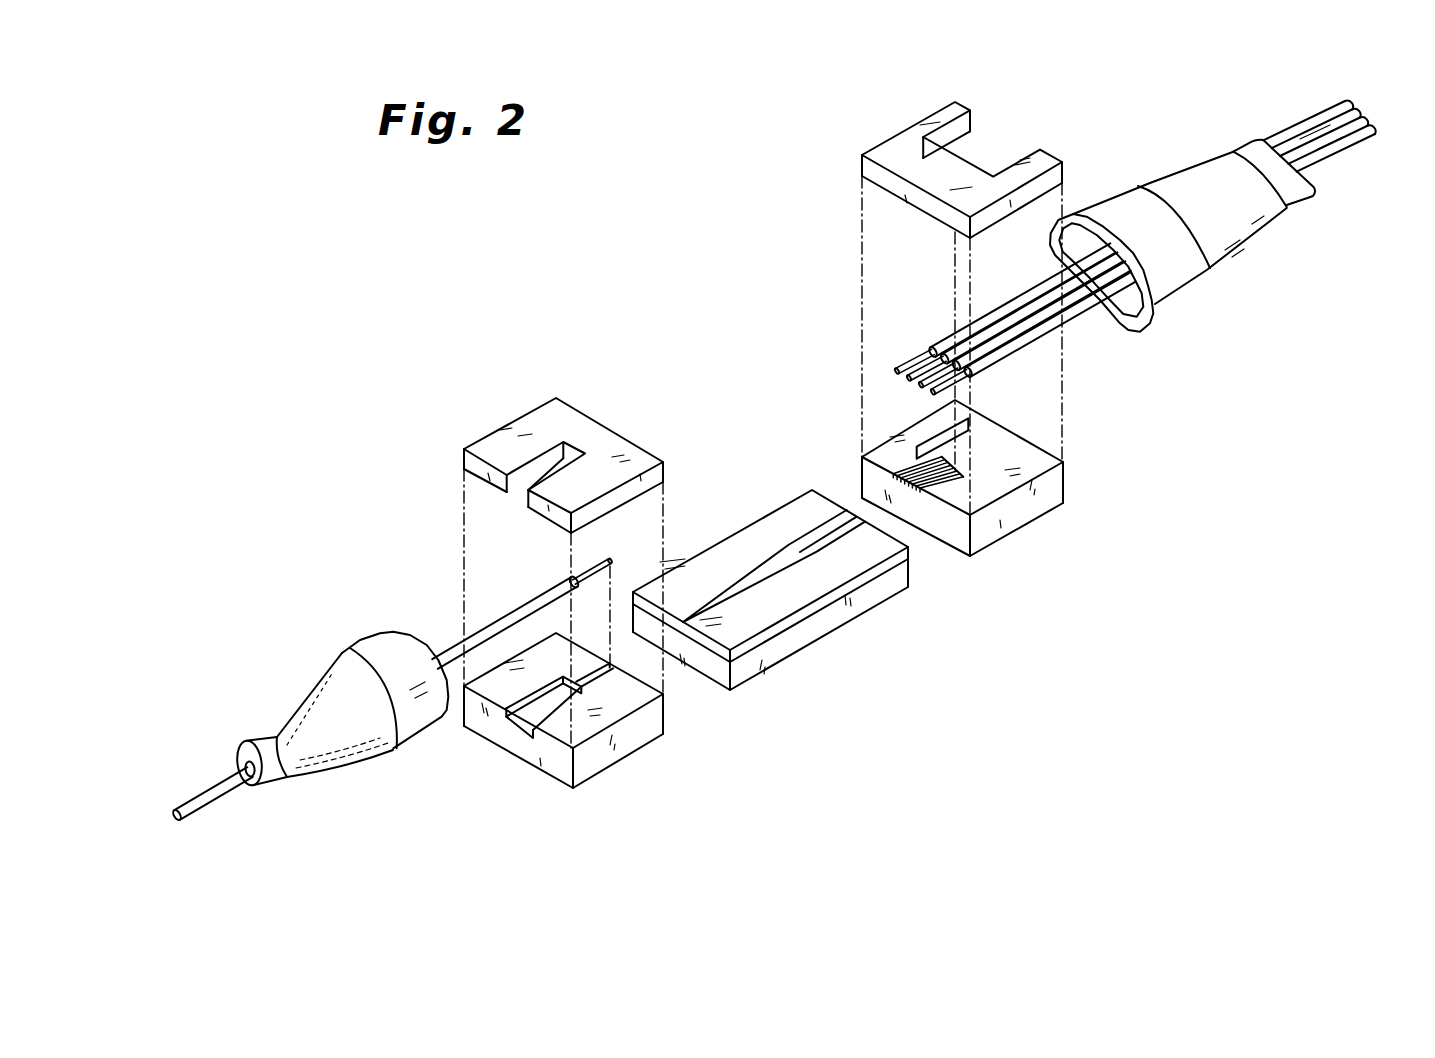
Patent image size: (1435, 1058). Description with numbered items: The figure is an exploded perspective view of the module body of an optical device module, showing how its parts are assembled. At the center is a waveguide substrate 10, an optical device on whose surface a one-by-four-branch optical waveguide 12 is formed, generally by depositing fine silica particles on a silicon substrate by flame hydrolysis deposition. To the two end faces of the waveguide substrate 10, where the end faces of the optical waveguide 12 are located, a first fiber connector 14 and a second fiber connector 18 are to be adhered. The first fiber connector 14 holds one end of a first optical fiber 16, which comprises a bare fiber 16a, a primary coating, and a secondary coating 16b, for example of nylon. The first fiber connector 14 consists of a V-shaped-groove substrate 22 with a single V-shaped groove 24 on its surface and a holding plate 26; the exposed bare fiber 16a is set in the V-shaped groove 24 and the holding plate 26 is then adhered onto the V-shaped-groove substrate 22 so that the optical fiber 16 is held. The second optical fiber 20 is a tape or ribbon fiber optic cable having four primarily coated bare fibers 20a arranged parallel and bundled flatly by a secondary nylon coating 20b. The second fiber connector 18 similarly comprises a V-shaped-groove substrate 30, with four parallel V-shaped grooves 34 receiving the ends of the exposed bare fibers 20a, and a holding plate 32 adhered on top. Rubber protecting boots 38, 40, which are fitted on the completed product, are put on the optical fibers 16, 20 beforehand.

The waveguide substrate 10 is at (812, 630).
The optical waveguide 12 is at (773, 553).
The first fiber connector 14 is at (451, 461).
The first optical fiber 16 is at (223, 793).
The bare fiber 16a is at (592, 562).
The secondary coating 16b is at (448, 650).
The second fiber connector 18 is at (1095, 462).
The second optical fiber 20 is at (1363, 166).
The bare fibers 20a is at (933, 353).
The nylon 20b is at (1308, 123).
The V-shaped-groove substrate 22 is at (597, 763).
The V-shaped groove 24 is at (603, 675).
The holding plate 26 is at (528, 428).
The V-shaped-groove substrate 30 is at (1005, 522).
The holding plate 32 is at (897, 148).
The V-shaped grooves 34 is at (943, 495).
The rubber protecting boot 38 is at (356, 757).
The rubber protecting boot 40 is at (1183, 288).